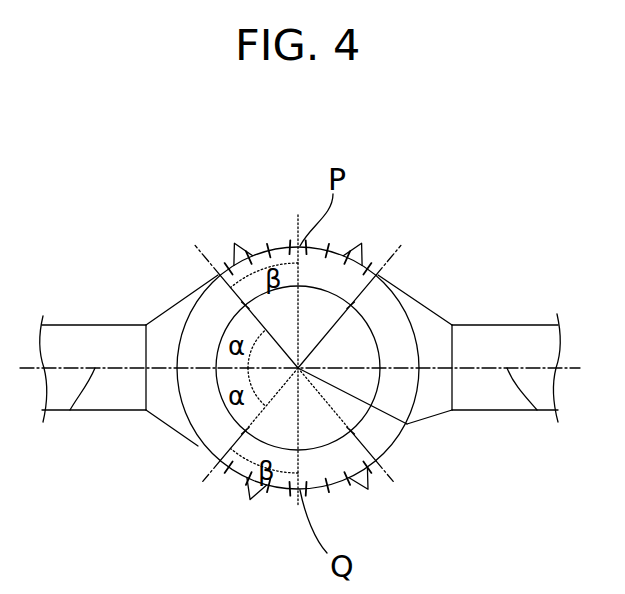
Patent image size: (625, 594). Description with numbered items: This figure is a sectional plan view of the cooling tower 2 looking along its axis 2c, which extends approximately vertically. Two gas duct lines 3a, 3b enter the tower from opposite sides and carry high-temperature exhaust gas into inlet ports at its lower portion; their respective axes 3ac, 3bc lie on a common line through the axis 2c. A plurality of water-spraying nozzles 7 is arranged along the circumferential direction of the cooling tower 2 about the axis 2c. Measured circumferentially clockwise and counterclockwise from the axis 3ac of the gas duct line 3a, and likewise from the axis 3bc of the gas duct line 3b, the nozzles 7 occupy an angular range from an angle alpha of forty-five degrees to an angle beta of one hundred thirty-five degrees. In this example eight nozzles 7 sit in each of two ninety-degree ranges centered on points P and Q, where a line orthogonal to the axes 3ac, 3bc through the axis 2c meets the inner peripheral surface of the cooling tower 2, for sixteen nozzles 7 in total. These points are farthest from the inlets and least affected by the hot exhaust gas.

The cooling tower 2 is at (382, 279).
The axis 2c is at (428, 424).
The gas duct line 3a is at (97, 325).
The axis of the gas duct line 3ac is at (68, 418).
The gas duct line 3b is at (505, 325).
The axis of the gas duct line 3bc is at (539, 418).
The water-spraying nozzles 7 is at (234, 243).